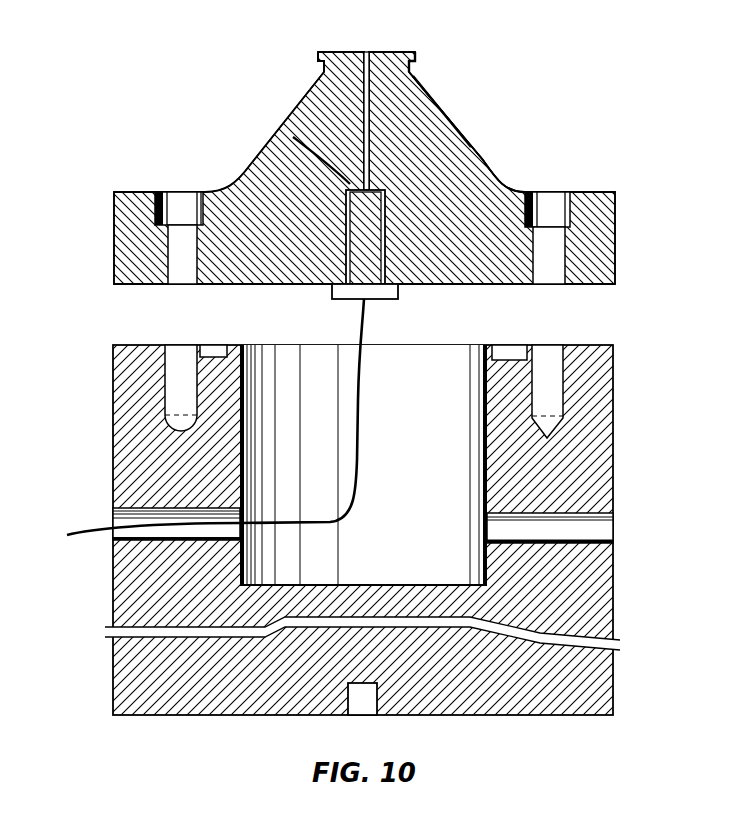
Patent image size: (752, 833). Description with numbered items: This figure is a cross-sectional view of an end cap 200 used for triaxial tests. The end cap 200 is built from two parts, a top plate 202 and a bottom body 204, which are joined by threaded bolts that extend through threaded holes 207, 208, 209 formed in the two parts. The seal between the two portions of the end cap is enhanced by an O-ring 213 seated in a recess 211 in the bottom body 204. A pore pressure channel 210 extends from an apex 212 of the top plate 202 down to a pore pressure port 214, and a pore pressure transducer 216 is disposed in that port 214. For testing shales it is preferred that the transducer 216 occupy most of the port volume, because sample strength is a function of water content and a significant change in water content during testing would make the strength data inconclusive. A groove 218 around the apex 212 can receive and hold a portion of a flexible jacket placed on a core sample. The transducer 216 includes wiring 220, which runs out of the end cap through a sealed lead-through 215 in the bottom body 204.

The end cap 200 is at (252, 152).
The top plate 202 is at (455, 150).
The bottom body 204 is at (605, 442).
The threaded hole 207 is at (556, 352).
The threaded hole 208 is at (172, 282).
The threaded hole 209 is at (174, 348).
The pore pressure channel 210 is at (374, 58).
The recess 211 is at (498, 348).
The apex 212 is at (335, 52).
The O-ring 213 is at (226, 345).
The pore pressure port 214 is at (293, 137).
The sealed lead-through 215 is at (112, 533).
The pore pressure transducer 216 is at (346, 268).
The groove 218 is at (412, 66).
The wiring 220 is at (88, 527).